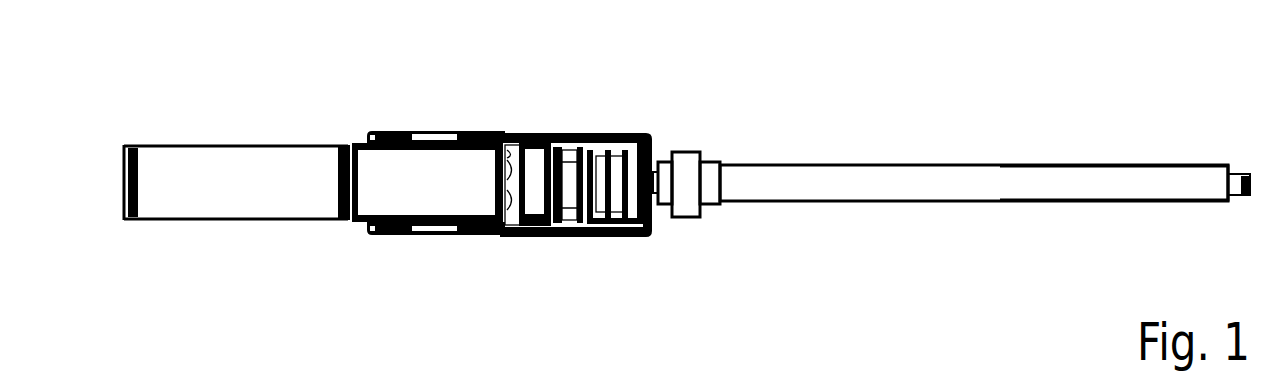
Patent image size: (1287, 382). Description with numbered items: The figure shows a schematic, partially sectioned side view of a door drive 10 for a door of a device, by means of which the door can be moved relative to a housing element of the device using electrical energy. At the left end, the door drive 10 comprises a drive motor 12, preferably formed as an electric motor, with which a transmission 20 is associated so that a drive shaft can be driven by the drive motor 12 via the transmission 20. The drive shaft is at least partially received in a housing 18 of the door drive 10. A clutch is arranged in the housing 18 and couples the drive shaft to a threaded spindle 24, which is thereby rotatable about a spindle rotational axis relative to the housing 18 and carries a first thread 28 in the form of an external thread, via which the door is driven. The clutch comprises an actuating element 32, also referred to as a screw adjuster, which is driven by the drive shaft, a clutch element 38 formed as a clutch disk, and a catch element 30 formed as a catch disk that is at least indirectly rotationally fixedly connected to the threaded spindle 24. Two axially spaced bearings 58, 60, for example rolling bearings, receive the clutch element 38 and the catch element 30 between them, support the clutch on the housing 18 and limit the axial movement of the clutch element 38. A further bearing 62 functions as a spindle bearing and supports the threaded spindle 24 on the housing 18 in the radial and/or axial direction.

The door drive 10 is at (576, 173).
The drive motor 12 is at (289, 176).
The housing 18 is at (421, 131).
The transmission 20 is at (449, 180).
The threaded spindle 24 is at (862, 176).
The first thread 28 is at (1008, 163).
The catch element 30 is at (618, 134).
The actuating element 32 is at (585, 240).
The clutch element 38 is at (588, 135).
The bearing 58 is at (525, 231).
The bearing 60 is at (625, 231).
The further bearing 62 is at (687, 152).